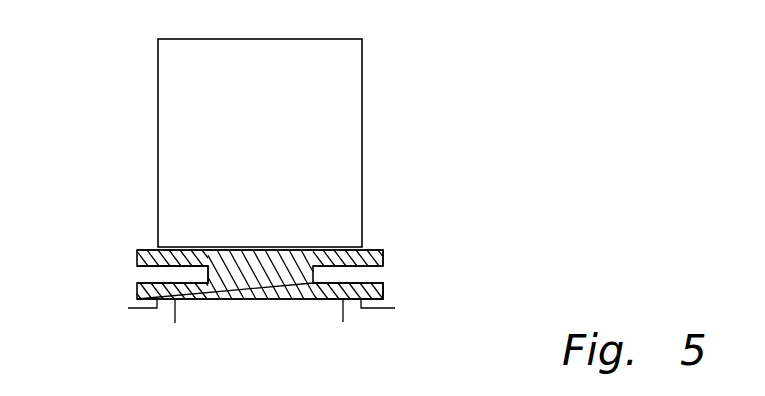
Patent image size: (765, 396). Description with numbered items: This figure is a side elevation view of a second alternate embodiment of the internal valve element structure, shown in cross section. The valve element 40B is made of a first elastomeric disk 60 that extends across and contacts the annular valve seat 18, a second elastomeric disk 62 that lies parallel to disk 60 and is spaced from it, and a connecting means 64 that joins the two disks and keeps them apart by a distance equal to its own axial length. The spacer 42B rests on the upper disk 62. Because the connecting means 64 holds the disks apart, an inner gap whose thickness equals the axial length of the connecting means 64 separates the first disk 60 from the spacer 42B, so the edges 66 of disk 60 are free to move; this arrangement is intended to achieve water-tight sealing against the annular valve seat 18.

The spacer 42B is at (300, 163).
The valve element 40B is at (383, 255).
The second elastomeric disk 62 is at (137, 258).
The connecting means 64 is at (140, 273).
The edges of elastomeric disk 66 is at (137, 290).
The first elastomeric disk 60 is at (383, 291).
The annular valve seat 18 is at (352, 302).